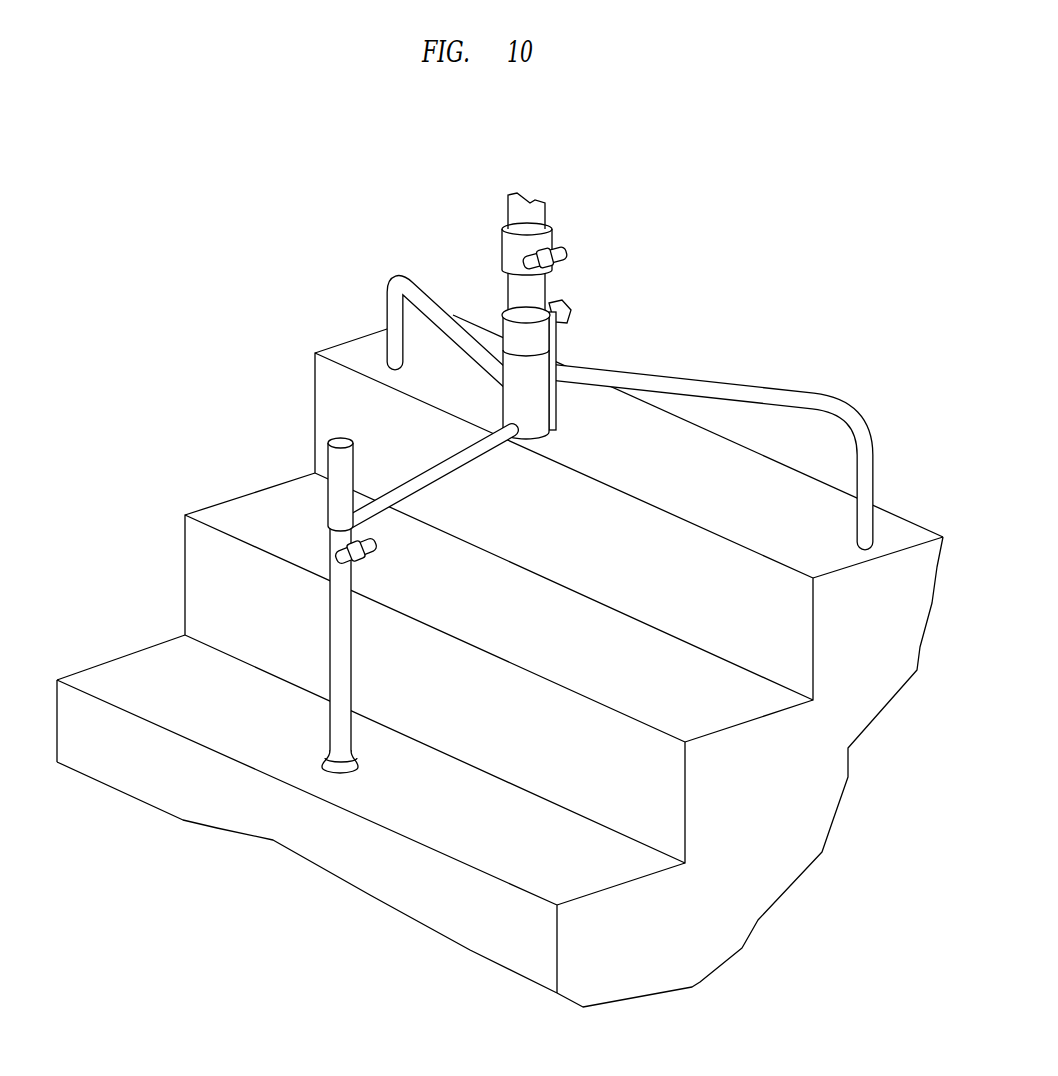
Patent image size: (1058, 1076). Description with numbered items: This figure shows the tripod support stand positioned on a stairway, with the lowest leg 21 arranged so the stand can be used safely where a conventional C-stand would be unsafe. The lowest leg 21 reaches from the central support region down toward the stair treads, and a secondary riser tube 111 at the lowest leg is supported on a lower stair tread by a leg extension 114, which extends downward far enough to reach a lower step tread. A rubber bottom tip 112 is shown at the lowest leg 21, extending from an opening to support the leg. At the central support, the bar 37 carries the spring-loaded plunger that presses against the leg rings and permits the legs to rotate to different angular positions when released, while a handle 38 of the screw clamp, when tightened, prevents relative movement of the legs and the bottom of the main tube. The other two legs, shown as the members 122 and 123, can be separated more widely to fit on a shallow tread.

The lowest leg 21 is at (455, 479).
The bar 37 is at (560, 348).
The handle 38 is at (568, 308).
The secondary riser tube 111 is at (354, 622).
The rubber bottom tip 112 is at (327, 458).
The leg extension 114 is at (356, 745).
The handrail 122 is at (727, 383).
The handrail 123 is at (460, 355).